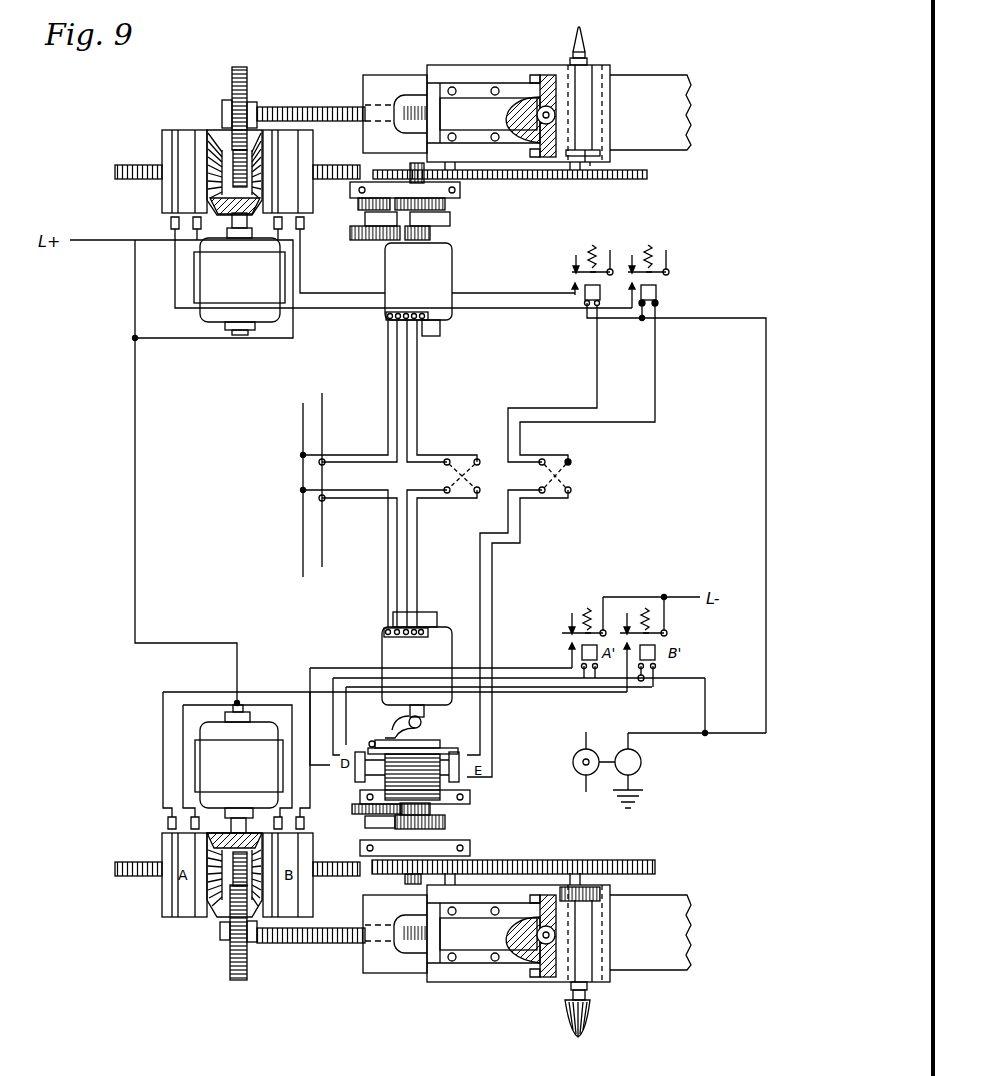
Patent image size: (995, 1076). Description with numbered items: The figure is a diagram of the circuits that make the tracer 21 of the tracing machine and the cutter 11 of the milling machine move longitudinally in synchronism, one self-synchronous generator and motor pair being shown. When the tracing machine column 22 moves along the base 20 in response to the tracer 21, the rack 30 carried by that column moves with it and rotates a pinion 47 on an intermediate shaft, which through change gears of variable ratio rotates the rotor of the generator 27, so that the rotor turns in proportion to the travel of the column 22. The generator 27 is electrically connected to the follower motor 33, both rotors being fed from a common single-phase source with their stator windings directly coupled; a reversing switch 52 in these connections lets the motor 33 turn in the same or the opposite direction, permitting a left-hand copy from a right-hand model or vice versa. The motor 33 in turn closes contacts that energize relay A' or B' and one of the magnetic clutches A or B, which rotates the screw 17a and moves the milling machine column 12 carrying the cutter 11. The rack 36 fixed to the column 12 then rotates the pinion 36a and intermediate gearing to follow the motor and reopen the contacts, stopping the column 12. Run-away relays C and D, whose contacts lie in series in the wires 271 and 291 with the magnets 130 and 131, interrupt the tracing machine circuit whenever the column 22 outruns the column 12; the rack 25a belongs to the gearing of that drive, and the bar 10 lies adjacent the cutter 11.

The workpiece bar 10 is at (635, 970).
The cutter 11 is at (590, 1033).
The column 12 is at (533, 967).
The screw 17a is at (322, 945).
The base 20 is at (393, 75).
The tracer 21 is at (587, 62).
The column 22 is at (525, 95).
The rack and gear 25a is at (270, 107).
The generator 27 is at (452, 262).
The rack 30 is at (647, 176).
The motor 33 is at (430, 640).
The rack 36 is at (545, 860).
The pinion 36a is at (408, 878).
The pinion 47 is at (405, 168).
The switch 52 is at (462, 458).
The magnet 130 is at (311, 171).
The magnet 131 is at (161, 171).
The wire 271 is at (596, 269).
The wire 291 is at (653, 270).